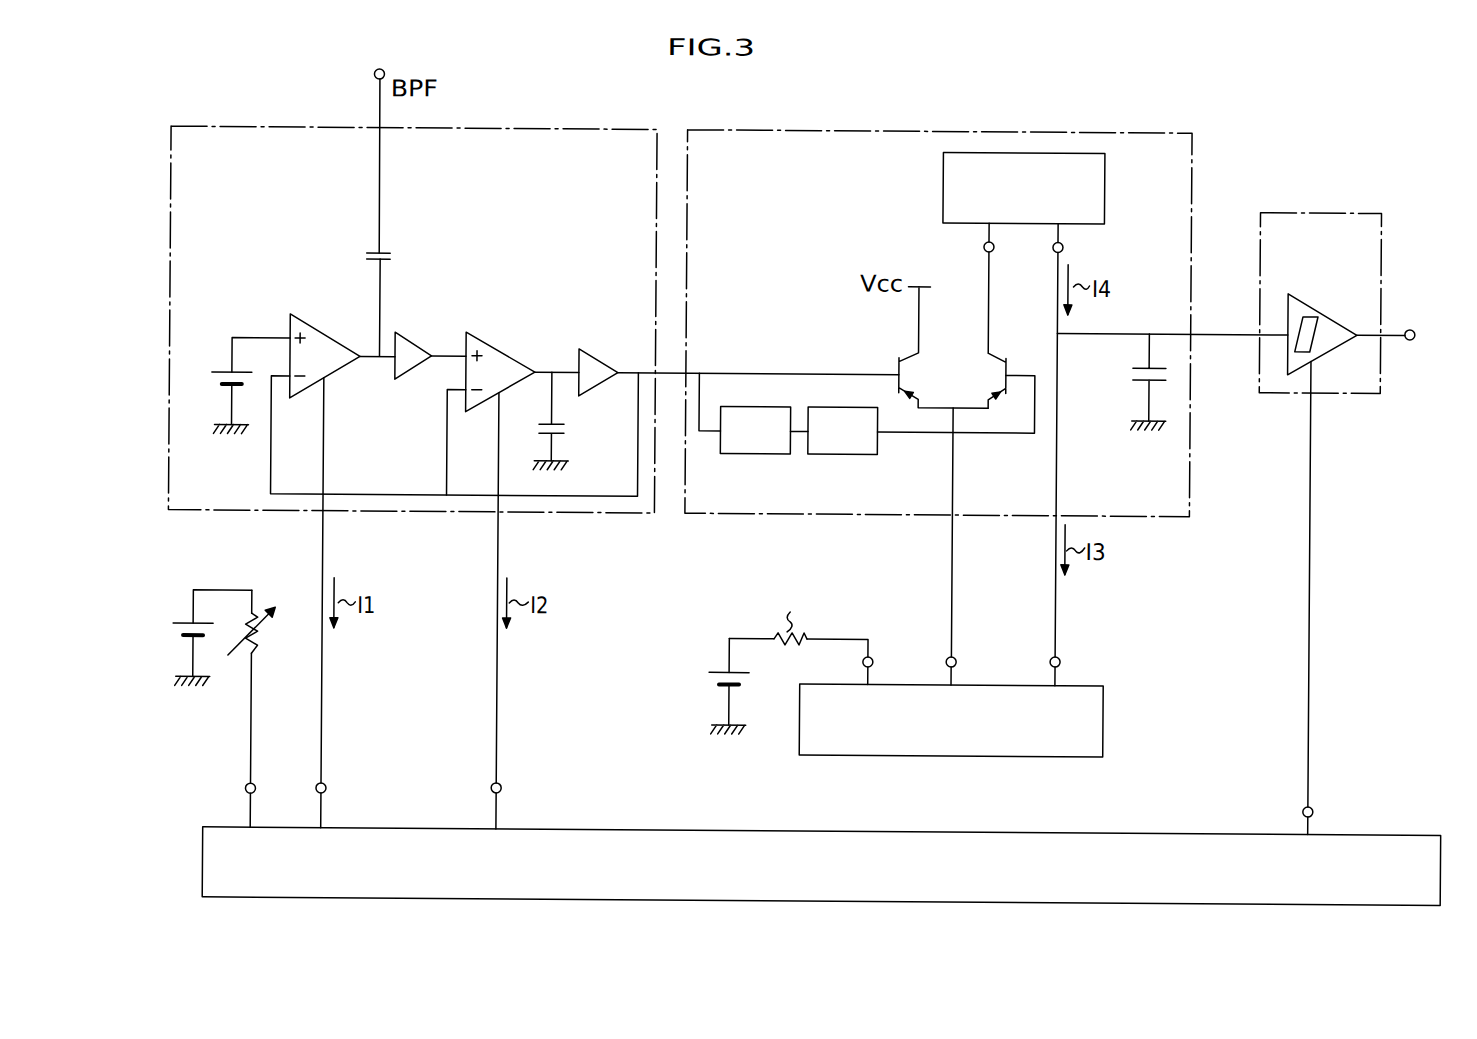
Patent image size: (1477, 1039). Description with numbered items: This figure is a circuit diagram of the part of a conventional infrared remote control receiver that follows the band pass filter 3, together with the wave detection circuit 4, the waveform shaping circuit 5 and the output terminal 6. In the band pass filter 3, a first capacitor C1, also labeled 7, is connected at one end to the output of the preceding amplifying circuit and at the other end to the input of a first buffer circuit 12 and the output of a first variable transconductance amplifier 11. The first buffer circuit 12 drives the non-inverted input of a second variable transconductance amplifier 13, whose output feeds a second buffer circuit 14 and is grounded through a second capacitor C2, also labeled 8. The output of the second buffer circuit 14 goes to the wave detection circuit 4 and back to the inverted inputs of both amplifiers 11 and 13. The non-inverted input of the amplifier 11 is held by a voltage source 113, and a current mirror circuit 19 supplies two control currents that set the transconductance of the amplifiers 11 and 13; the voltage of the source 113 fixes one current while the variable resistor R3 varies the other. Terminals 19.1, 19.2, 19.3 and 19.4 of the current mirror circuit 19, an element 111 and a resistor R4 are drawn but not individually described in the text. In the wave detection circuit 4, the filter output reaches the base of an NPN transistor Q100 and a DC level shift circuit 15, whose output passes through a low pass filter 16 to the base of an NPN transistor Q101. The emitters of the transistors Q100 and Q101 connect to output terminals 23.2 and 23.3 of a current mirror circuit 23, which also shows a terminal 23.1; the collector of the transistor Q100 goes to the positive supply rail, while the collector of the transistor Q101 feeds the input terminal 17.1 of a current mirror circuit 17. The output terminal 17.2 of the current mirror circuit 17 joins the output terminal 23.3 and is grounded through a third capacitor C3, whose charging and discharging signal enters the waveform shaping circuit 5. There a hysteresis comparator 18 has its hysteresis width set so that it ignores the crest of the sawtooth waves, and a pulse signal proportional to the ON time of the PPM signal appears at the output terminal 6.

The band pass filter 3 is at (494, 130).
The wave detection circuit 4 is at (988, 130).
The waveform shaping circuit 5 is at (1330, 210).
The output terminal 6 is at (1408, 326).
The first capacitor 7 is at (373, 255).
The second capacitor 8 is at (578, 425).
The first variable transconductance amplifier 11 is at (287, 324).
The first buffer circuit 12 is at (409, 340).
The second variable transconductance amplifier 13 is at (490, 344).
The second buffer circuit 14 is at (588, 356).
The DC level shift circuit 15 is at (756, 455).
The low pass filter 16 is at (842, 455).
The current mirror circuit 17 is at (941, 184).
The input terminal 17.1 is at (961, 244).
The output terminal 17.2 is at (1033, 243).
The hysteresis comparator 18 is at (1318, 313).
The current mirror circuit 19 is at (1389, 831).
The terminal of control unit 19.1 is at (225, 801).
The terminal of control unit 19.2 is at (349, 789).
The terminal of control unit 19.3 is at (523, 789).
The terminal of control unit 19.4 is at (1335, 818).
The current mirror circuit 23 is at (938, 755).
The terminal of current source unit 23.1 is at (864, 659).
The output terminal 23.2 is at (975, 659).
The output terminal 23.3 is at (1078, 660).
The reference voltage source 111 is at (432, 661).
The voltage source 113 is at (236, 385).
The first capacitor C1 is at (365, 258).
The second capacitor C2 is at (564, 434).
The third capacitor C3 is at (1128, 382).
The variable resistor R3 is at (264, 687).
The resistor R4 is at (769, 617).
The NPN transistor Q100 is at (910, 347).
The NPN transistor Q101 is at (964, 381).